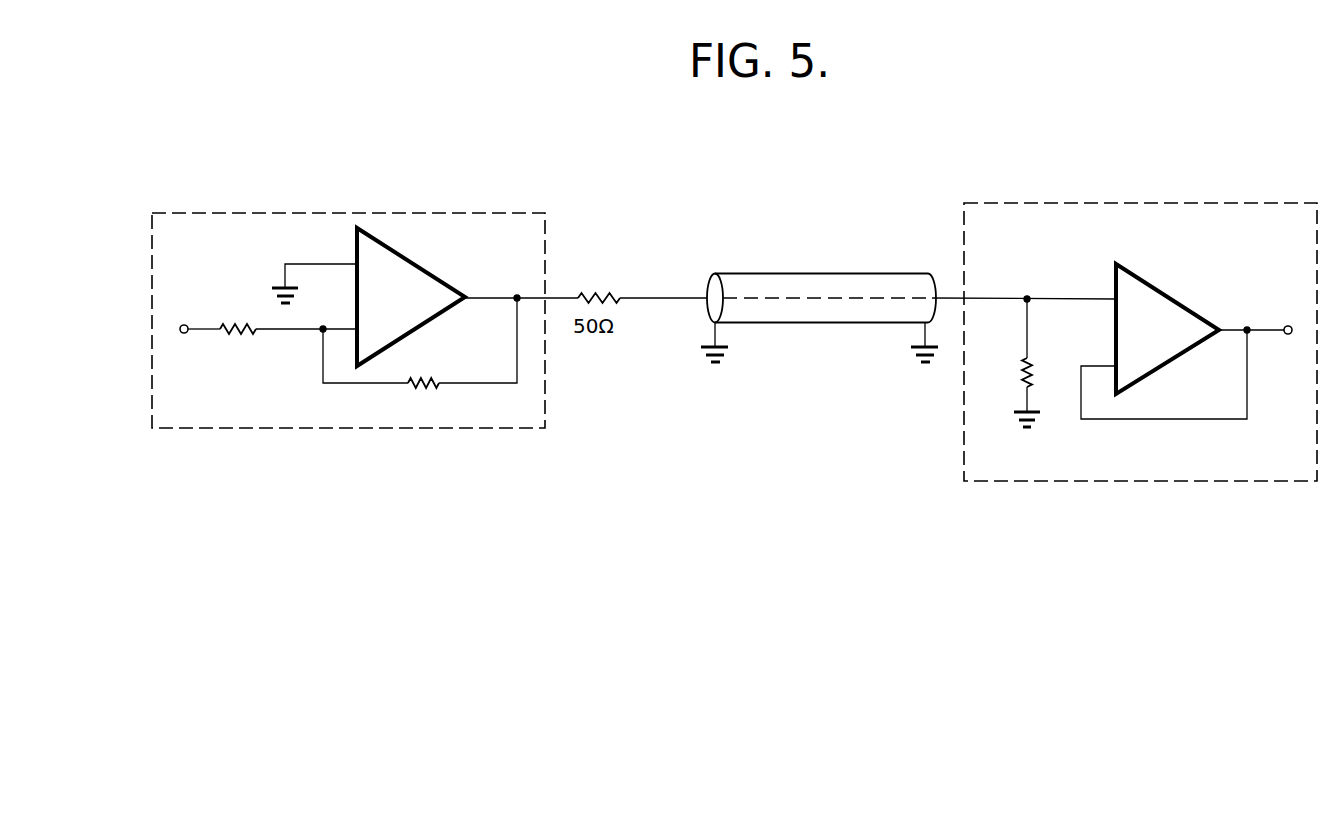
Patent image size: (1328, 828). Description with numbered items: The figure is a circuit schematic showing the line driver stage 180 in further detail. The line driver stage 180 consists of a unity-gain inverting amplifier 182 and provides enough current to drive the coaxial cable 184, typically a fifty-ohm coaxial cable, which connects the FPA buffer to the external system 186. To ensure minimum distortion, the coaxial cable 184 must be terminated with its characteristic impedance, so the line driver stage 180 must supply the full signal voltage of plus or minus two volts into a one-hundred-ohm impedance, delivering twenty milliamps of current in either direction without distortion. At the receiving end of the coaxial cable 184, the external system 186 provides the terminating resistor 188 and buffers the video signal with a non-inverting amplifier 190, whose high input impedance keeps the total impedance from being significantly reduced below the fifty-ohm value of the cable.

The line driver stage 180 is at (360, 342).
The unity-gain inverting amplifier 182 is at (440, 281).
The coaxial cable 184 is at (760, 323).
The external system 186 is at (1140, 369).
The terminating resistor 188 is at (1025, 365).
The non-inverting amplifier 190 is at (1176, 302).